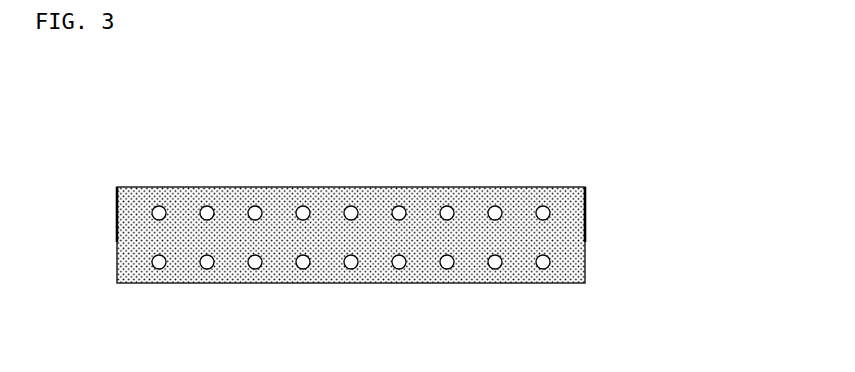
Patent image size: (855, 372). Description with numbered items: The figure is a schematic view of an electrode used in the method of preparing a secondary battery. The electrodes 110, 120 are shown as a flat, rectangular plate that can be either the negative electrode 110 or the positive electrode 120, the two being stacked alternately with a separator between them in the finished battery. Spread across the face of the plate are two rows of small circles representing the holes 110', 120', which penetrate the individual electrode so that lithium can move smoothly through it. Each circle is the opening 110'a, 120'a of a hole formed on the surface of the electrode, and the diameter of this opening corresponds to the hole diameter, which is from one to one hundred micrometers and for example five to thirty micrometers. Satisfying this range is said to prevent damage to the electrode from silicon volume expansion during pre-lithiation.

The negative electrode 110 is at (406, 234).
The positive electrode 120 is at (406, 234).
The hole 110' is at (429, 237).
The hole 120' is at (429, 237).
The opening 110'a is at (537, 177).
The opening 120'a is at (537, 177).